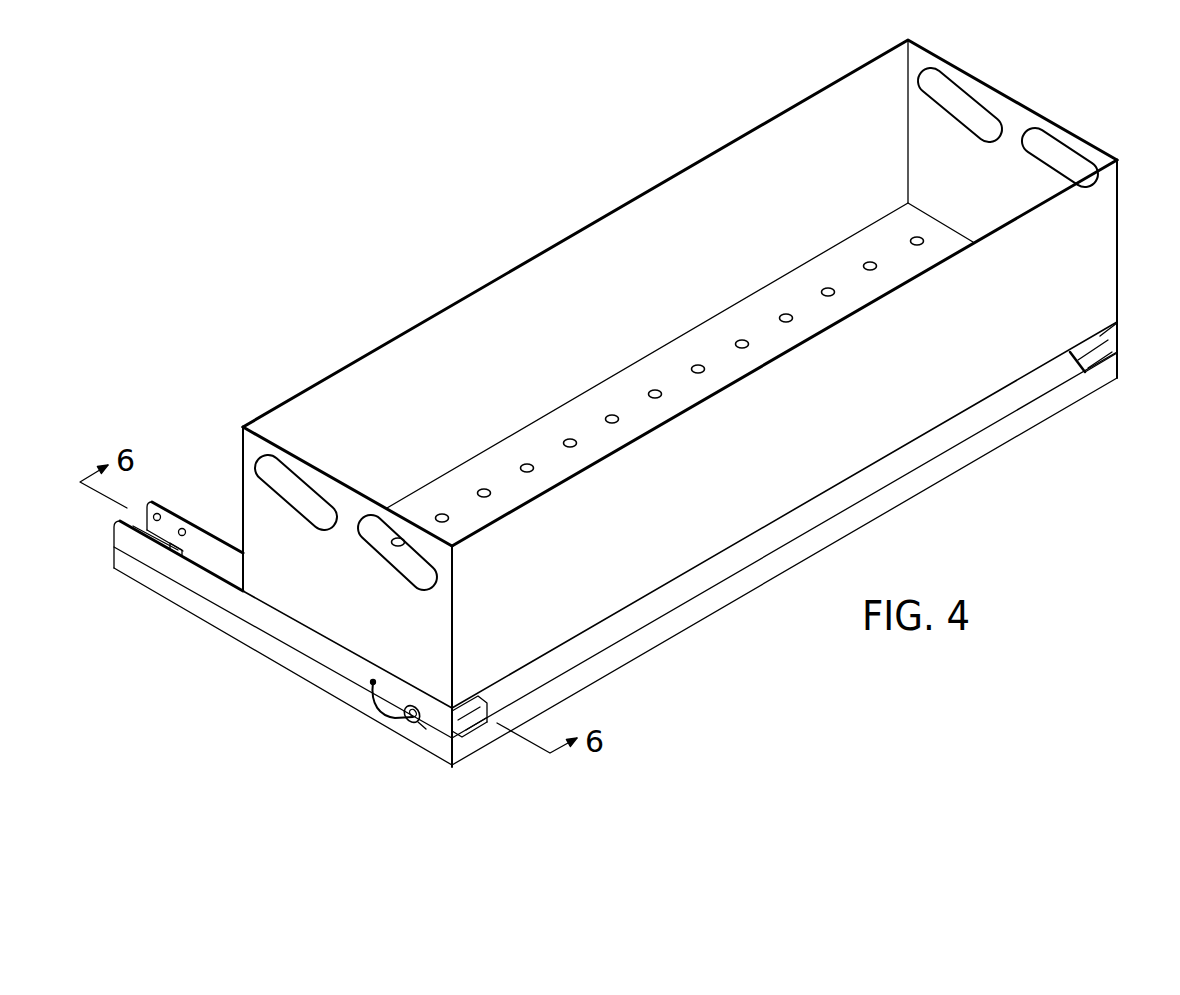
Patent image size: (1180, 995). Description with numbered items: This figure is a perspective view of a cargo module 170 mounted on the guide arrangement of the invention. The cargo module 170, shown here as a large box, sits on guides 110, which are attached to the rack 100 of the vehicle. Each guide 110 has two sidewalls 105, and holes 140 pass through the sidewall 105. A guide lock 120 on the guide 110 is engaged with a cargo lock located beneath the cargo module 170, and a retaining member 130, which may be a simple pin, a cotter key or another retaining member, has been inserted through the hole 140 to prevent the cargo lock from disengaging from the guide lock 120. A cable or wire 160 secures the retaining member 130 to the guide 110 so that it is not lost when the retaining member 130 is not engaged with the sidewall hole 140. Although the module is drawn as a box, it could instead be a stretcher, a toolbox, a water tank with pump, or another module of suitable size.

The rack 100 is at (214, 507).
The sidewall 105 is at (197, 550).
The guide 110 is at (252, 619).
The guide lock 120 is at (170, 543).
The retaining member 130 is at (424, 728).
The hole 140 is at (123, 536).
The cable or wire 160 is at (380, 718).
The cargo module 170 is at (905, 398).